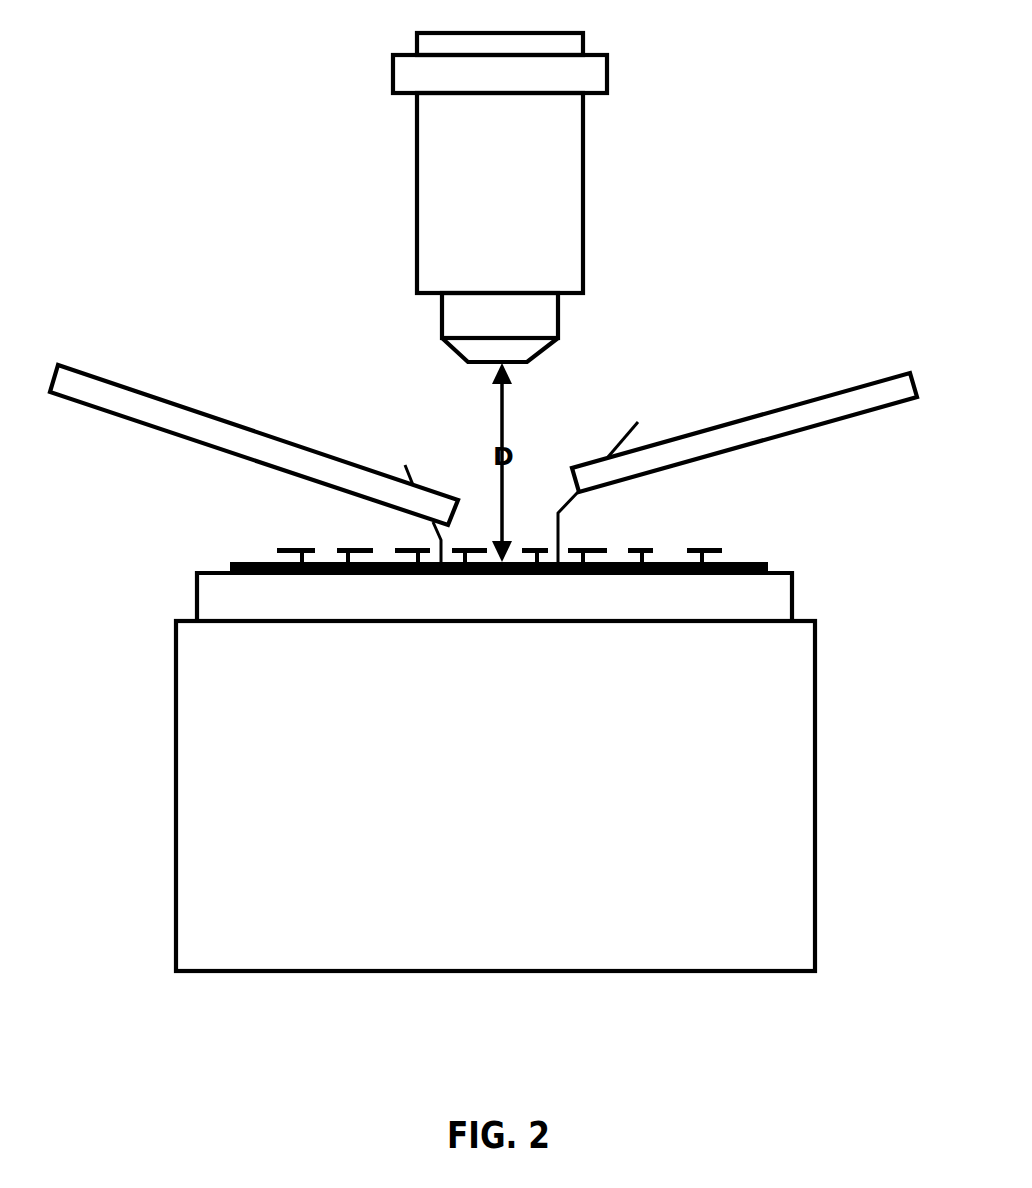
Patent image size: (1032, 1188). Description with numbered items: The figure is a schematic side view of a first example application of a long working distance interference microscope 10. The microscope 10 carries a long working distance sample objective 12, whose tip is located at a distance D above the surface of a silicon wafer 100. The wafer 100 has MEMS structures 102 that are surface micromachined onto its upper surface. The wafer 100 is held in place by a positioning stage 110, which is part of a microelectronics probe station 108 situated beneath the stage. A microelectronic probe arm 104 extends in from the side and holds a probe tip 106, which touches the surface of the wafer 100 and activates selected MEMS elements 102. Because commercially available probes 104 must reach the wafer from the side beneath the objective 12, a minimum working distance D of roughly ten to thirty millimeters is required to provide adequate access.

The microscope 10 is at (283, 97).
The long working distance sample objective 12 is at (602, 210).
The silicon wafer 100 is at (757, 555).
The MEMS structures 102 is at (347, 543).
The microelectronic probe arm 104 is at (792, 397).
The probe tip 106 is at (618, 435).
The microelectronics probe station 108 is at (823, 785).
The positioning stage 110 is at (185, 598).